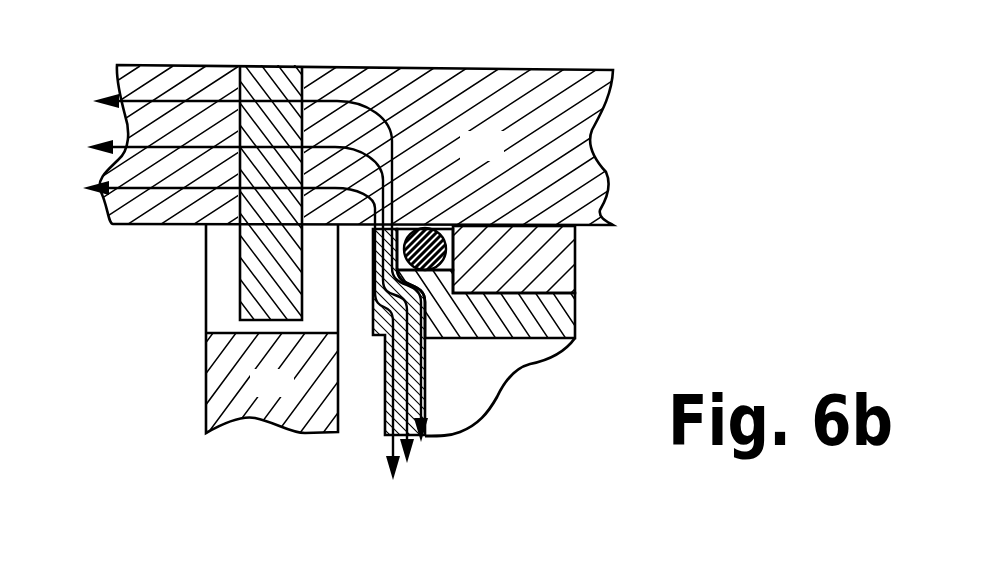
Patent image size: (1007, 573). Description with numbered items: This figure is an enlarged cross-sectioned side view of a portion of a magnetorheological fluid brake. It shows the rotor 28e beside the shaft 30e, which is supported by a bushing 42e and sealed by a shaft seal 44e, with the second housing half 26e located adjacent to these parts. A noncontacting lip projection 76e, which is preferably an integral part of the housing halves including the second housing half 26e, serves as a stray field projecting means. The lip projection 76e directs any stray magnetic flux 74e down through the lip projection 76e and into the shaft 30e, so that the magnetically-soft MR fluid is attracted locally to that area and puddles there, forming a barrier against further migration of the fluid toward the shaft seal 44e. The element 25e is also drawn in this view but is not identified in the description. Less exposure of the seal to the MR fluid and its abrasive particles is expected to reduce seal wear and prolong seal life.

The shaft 30e is at (460, 158).
The rotor 28e is at (250, 395).
The bushing 42e is at (563, 255).
The second housing half 26e is at (567, 310).
The lip projection 76e is at (372, 229).
The shaft seal 44e is at (457, 223).
The seal member 25e is at (427, 397).
The stray magnetic flux 74e is at (373, 103).